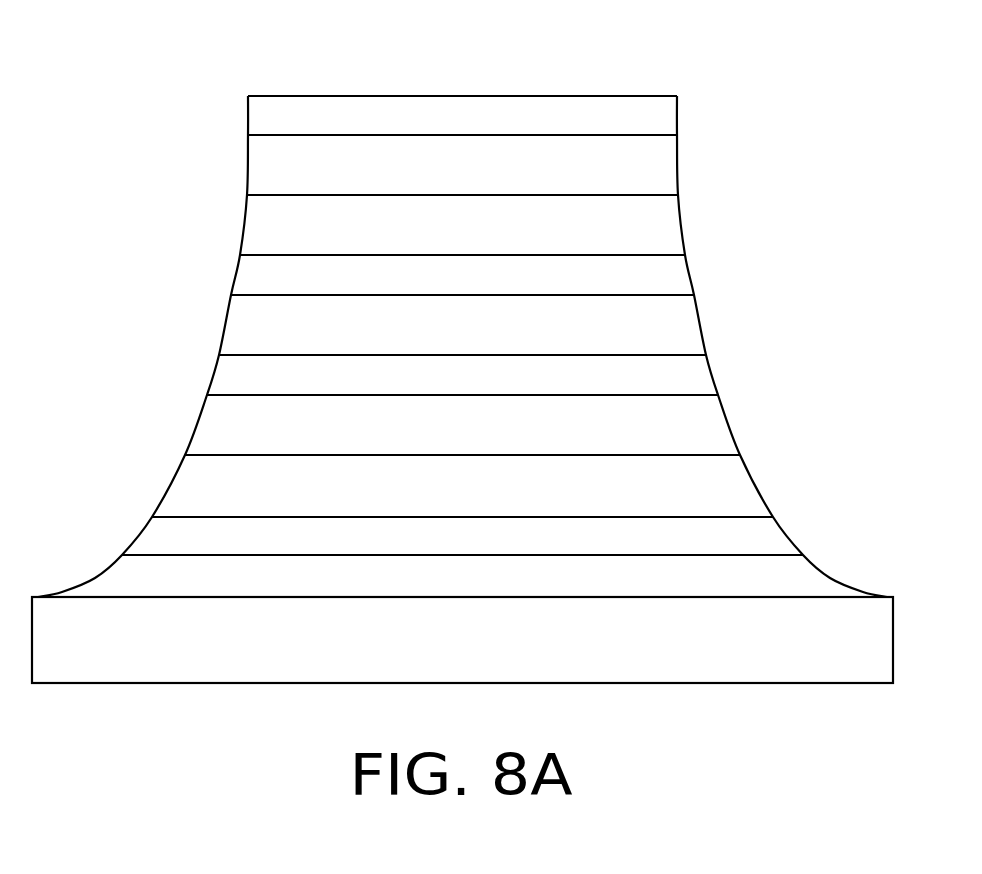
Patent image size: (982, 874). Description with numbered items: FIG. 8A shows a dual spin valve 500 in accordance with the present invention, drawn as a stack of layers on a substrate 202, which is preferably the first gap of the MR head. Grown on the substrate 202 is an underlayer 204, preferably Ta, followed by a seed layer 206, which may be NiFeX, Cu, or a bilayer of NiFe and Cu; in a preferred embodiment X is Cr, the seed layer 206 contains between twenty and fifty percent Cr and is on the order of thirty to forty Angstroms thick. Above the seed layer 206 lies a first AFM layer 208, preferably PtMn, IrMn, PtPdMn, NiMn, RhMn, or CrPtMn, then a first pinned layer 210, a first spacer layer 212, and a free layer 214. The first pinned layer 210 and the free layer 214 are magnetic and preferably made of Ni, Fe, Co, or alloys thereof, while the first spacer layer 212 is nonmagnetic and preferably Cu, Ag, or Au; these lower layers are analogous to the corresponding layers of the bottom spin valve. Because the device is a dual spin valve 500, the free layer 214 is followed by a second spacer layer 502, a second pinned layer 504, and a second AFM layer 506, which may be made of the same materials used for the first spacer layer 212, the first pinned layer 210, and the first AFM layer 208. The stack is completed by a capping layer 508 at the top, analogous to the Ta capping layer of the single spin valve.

The dual spin valve 500 is at (443, 32).
The capping layer 508 is at (672, 113).
The second AFM layer 506 is at (255, 170).
The second pinned layer 504 is at (677, 223).
The second spacer layer 502 is at (237, 277).
The free layer 214 is at (693, 322).
The first spacer layer 212 is at (223, 380).
The first pinned layer 210 is at (723, 425).
The first AFM layer 208 is at (187, 485).
The seed layer 206 is at (775, 537).
The underlayer 204 is at (100, 580).
The substrate 202 is at (217, 686).